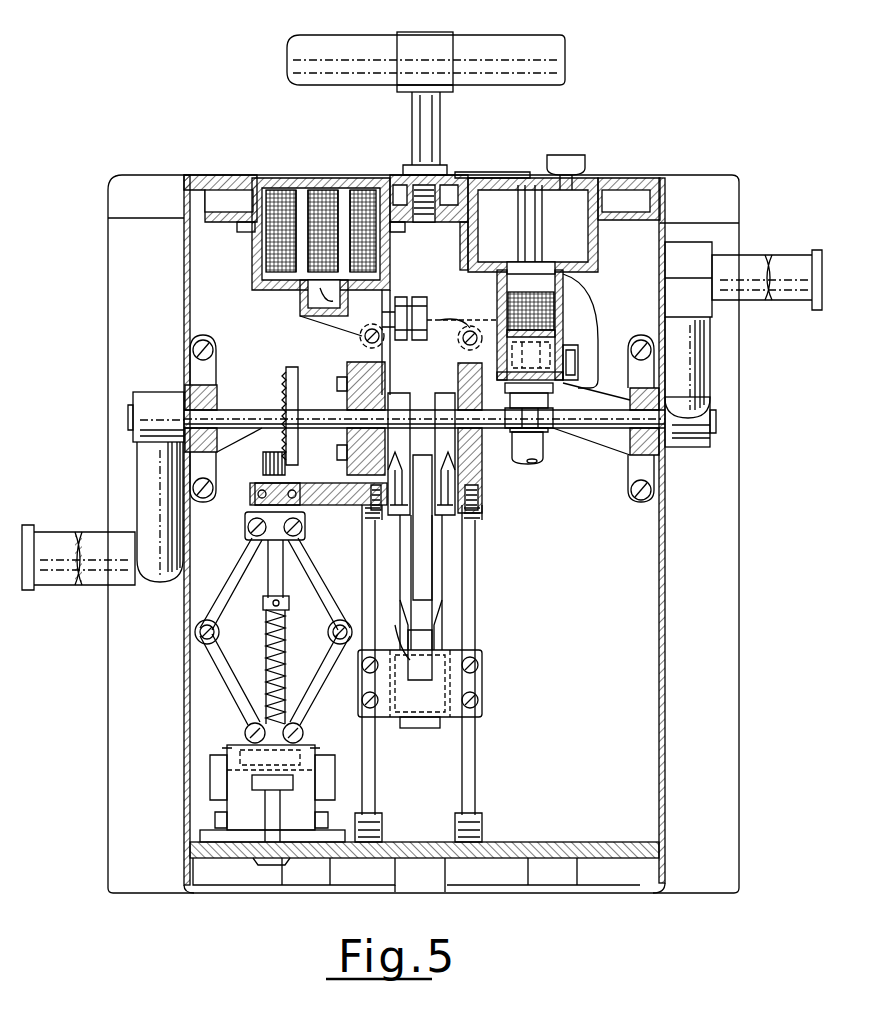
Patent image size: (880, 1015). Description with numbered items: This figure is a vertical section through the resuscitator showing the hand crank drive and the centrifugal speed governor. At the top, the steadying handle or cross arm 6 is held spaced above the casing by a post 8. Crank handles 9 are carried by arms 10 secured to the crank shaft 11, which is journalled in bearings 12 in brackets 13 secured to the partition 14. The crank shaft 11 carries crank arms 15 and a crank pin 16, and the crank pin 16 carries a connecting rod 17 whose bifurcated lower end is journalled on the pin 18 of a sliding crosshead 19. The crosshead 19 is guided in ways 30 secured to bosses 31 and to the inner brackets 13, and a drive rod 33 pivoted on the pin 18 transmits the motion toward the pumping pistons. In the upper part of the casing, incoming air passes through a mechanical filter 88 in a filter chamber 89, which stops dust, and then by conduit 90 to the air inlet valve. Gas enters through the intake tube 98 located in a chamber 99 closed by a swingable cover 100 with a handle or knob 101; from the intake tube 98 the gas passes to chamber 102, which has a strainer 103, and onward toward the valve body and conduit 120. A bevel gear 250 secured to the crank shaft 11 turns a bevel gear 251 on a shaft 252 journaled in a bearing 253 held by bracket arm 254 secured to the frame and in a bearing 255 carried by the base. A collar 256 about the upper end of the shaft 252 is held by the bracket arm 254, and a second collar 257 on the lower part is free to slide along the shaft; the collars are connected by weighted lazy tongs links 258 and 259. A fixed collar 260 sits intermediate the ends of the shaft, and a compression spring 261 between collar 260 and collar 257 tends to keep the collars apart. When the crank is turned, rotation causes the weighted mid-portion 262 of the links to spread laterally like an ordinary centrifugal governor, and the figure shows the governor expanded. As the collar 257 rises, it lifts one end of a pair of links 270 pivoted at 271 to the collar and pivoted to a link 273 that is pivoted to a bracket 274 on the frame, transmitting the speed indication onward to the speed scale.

The steadying handle or cross arm 6 is at (330, 40).
The post 8 is at (415, 122).
The crank handle 9 is at (95, 545).
The arm 10 is at (145, 485).
The crank shaft 11 is at (128, 418).
The bearing 12 is at (195, 390).
The bracket 13 is at (205, 340).
The partition 14 is at (205, 266).
The crank arm 15 is at (396, 398).
The crank pin 16 is at (445, 520).
The connecting rod 17 is at (420, 588).
The pin 18 is at (428, 655).
The sliding crosshead 19 is at (482, 677).
The way 30 is at (375, 768).
The boss 31 is at (383, 832).
The drive rod 33 is at (412, 665).
The mechanical filter 88 is at (252, 180).
The filter chamber 89 is at (252, 262).
The conduit 90 is at (442, 320).
The intake tube 98 is at (540, 235).
The chamber 99 is at (475, 243).
The swingable cover 100 is at (505, 176).
The handle or knob 101 is at (568, 160).
The chamber 102 is at (563, 316).
The strainer 103 is at (548, 303).
The conduit 120 is at (545, 398).
The bevel gear 250 is at (295, 378).
The bevel gear 251 is at (263, 462).
The shaft 252 is at (268, 586).
The bearing 253 is at (255, 495).
The bracket arm 254 is at (318, 485).
The bearing 255 is at (262, 866).
The collar 256 is at (245, 522).
The collar 257 is at (255, 724).
The lazy tongs link 258 is at (228, 580).
The lazy tongs link 259 is at (228, 680).
The fixed collar 260 is at (289, 602).
The compression spring 261 is at (285, 665).
The weighted mid-portion of links 262 is at (196, 626).
The link 270 is at (212, 783).
The pivot 271 is at (228, 756).
The link 273 is at (262, 811).
The bracket 274 is at (200, 835).